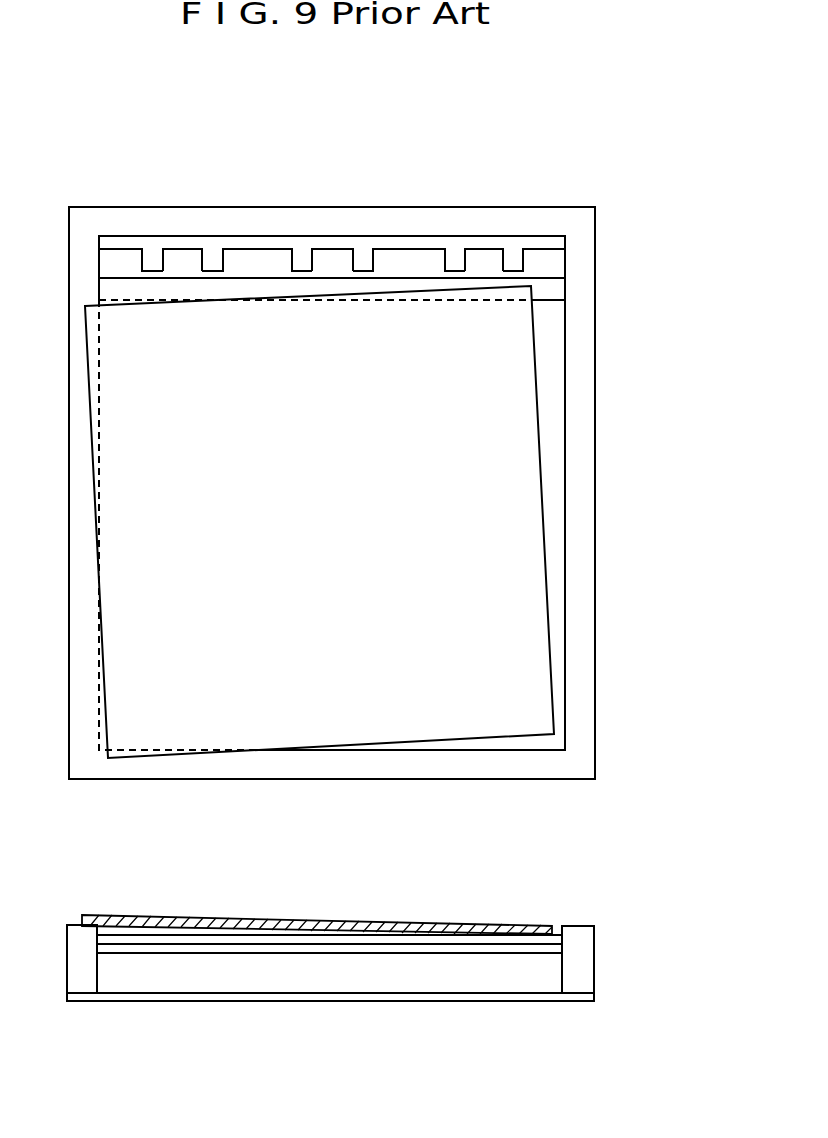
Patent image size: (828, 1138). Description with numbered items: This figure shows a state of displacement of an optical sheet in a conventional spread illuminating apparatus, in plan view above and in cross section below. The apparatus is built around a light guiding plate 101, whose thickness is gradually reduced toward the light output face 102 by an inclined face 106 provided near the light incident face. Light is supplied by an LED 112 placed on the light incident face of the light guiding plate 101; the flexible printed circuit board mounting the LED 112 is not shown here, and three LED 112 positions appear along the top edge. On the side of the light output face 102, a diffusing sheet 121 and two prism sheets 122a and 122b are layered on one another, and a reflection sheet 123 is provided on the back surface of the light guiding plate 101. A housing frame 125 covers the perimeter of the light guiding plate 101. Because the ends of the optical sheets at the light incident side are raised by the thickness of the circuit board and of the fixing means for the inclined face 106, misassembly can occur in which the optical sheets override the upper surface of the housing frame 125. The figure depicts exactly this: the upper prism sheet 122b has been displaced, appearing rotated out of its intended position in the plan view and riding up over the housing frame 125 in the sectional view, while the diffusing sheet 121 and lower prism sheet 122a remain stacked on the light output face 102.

The light guiding plate 101 is at (544, 245).
The light output face 102 is at (552, 383).
The inclined face 106 is at (557, 290).
The LED 112 is at (179, 257).
The diffusing sheet 121 is at (517, 950).
The prism sheet 122a is at (460, 942).
The prism sheet 122b is at (525, 638).
The reflection sheet 123 is at (448, 1002).
The housing frame 125 is at (580, 332).